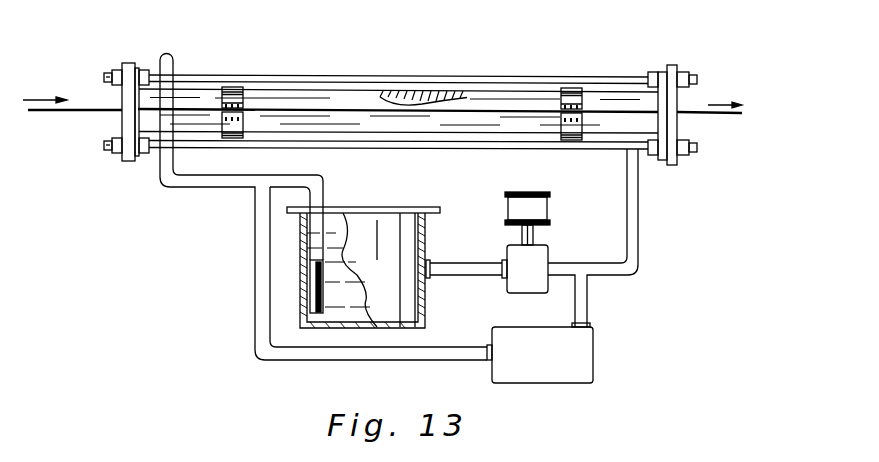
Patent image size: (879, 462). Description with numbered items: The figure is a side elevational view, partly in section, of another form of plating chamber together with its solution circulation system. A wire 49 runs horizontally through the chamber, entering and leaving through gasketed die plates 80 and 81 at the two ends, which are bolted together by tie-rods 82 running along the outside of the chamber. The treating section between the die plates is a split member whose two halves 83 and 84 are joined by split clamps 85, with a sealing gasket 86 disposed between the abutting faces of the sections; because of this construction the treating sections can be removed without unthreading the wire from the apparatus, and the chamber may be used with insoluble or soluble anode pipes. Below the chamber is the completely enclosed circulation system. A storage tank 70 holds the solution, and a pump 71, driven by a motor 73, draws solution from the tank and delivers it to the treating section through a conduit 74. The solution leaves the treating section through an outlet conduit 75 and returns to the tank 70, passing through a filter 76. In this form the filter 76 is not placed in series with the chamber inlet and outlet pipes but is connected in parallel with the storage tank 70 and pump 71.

The center conductor rod 49 is at (84, 113).
The storage tank 70 is at (428, 237).
The pump 71 is at (550, 254).
The motor 73 is at (548, 211).
The conduit 74 is at (639, 225).
The outlet conduit 75 is at (175, 54).
The filter 76 is at (545, 383).
The gasketed die plate 80 is at (133, 62).
The gasketed die plate 81 is at (681, 38).
The tie-rods 82 is at (462, 76).
The treating section half 83 is at (330, 91).
The treating section half 84 is at (337, 142).
The split clamps 85 is at (247, 98).
The sealing gasket 86 is at (504, 114).